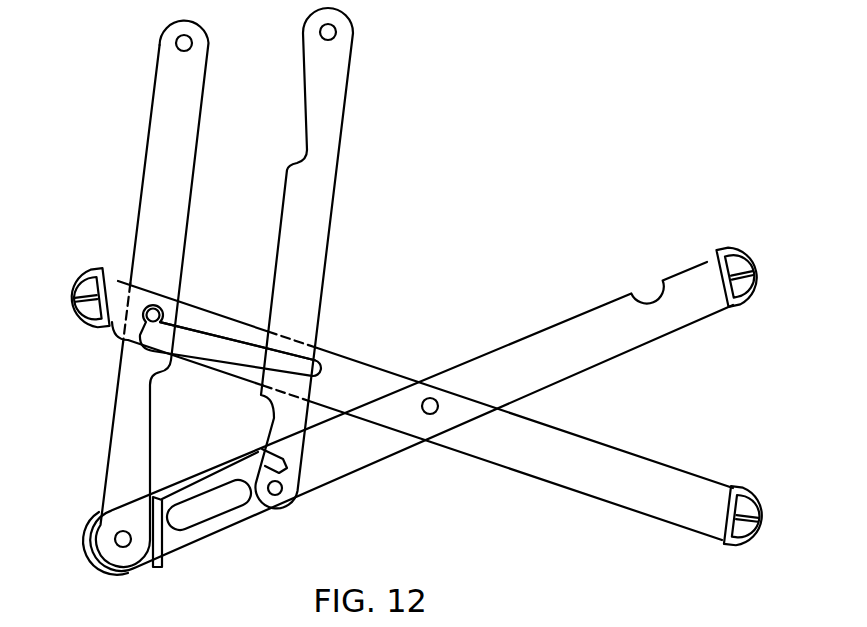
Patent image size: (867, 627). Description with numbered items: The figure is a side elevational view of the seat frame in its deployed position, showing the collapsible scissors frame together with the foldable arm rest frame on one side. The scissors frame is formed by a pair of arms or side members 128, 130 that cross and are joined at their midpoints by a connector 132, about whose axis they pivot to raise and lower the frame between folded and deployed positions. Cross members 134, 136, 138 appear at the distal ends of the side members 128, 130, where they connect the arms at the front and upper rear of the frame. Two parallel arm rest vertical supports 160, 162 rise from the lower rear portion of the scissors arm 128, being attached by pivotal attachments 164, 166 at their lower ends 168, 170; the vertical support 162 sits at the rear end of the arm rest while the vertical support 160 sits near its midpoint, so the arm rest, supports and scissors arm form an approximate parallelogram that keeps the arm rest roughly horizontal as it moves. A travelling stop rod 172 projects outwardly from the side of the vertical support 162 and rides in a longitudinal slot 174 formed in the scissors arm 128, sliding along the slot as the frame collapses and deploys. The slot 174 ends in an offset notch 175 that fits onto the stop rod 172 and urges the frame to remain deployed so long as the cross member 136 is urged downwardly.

The side member 128 is at (613, 323).
The side member 130 is at (645, 480).
The connector 132 is at (428, 396).
The cross member 134 is at (735, 252).
The cross member 136 is at (82, 268).
The cross member 138 is at (741, 486).
The arm rest vertical support 160 is at (338, 79).
The arm rest vertical support 162 is at (167, 81).
The pivotal attachment 164 is at (279, 496).
The pivotal attachment 166 is at (129, 547).
The lower end 168 is at (266, 503).
The lower end 170 is at (100, 555).
The travelling stop rod 172 is at (166, 323).
The longitudinal slot 174 is at (252, 344).
The offset notch 175 is at (158, 307).